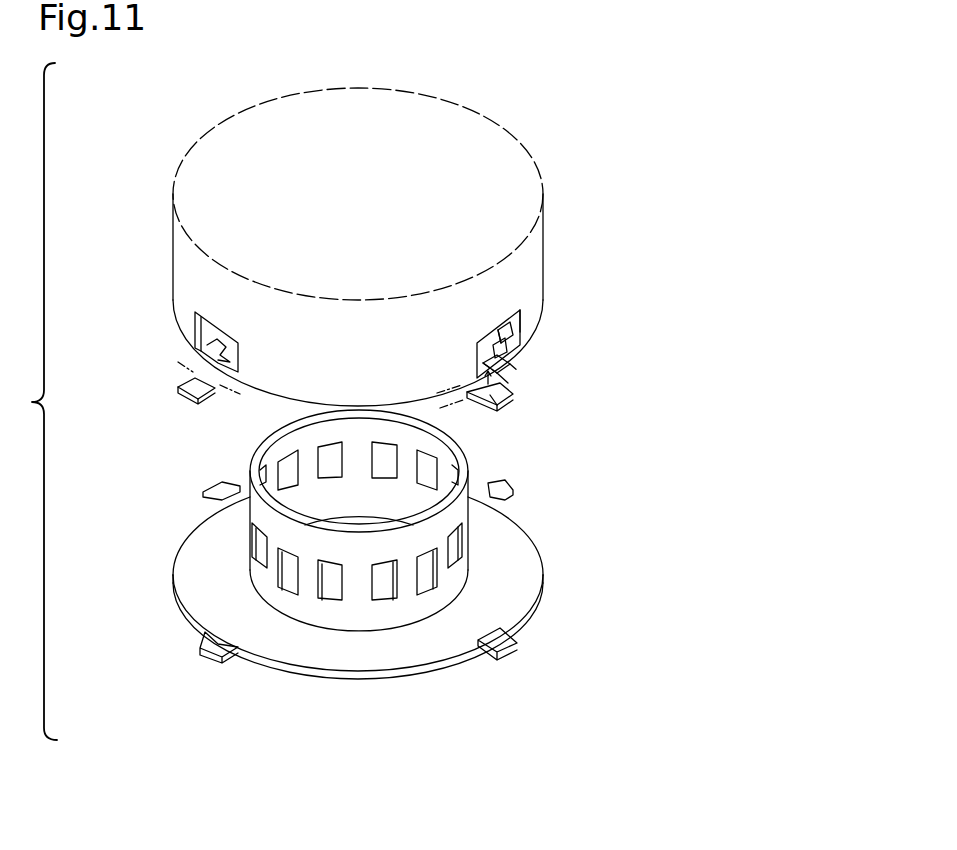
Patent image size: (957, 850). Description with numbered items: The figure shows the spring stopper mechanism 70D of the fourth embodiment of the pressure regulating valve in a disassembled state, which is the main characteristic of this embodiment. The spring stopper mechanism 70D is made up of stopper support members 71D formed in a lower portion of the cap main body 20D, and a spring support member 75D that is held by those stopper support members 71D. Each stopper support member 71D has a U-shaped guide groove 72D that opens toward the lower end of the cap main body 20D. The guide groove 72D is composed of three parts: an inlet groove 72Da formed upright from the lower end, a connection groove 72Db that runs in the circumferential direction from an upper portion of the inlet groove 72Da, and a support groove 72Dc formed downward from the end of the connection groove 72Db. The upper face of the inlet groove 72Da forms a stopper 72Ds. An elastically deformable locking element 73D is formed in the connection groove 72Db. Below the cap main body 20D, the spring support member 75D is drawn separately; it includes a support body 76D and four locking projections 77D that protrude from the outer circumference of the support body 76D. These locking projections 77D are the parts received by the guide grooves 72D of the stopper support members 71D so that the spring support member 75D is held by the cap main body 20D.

The cap main body 20D is at (528, 278).
The spring stopper mechanism 70D is at (770, 315).
The stopper support member 71D is at (195, 334).
The guide groove 72D is at (581, 369).
The inlet groove 72Da is at (512, 372).
The connection groove 72Db is at (507, 350).
The support groove 72Dc is at (515, 331).
The stopper 72Ds is at (465, 400).
The locking element 73D is at (520, 323).
The spring support member 75D is at (468, 544).
The support body 76D is at (697, 657).
The locking projection 77D is at (180, 397).